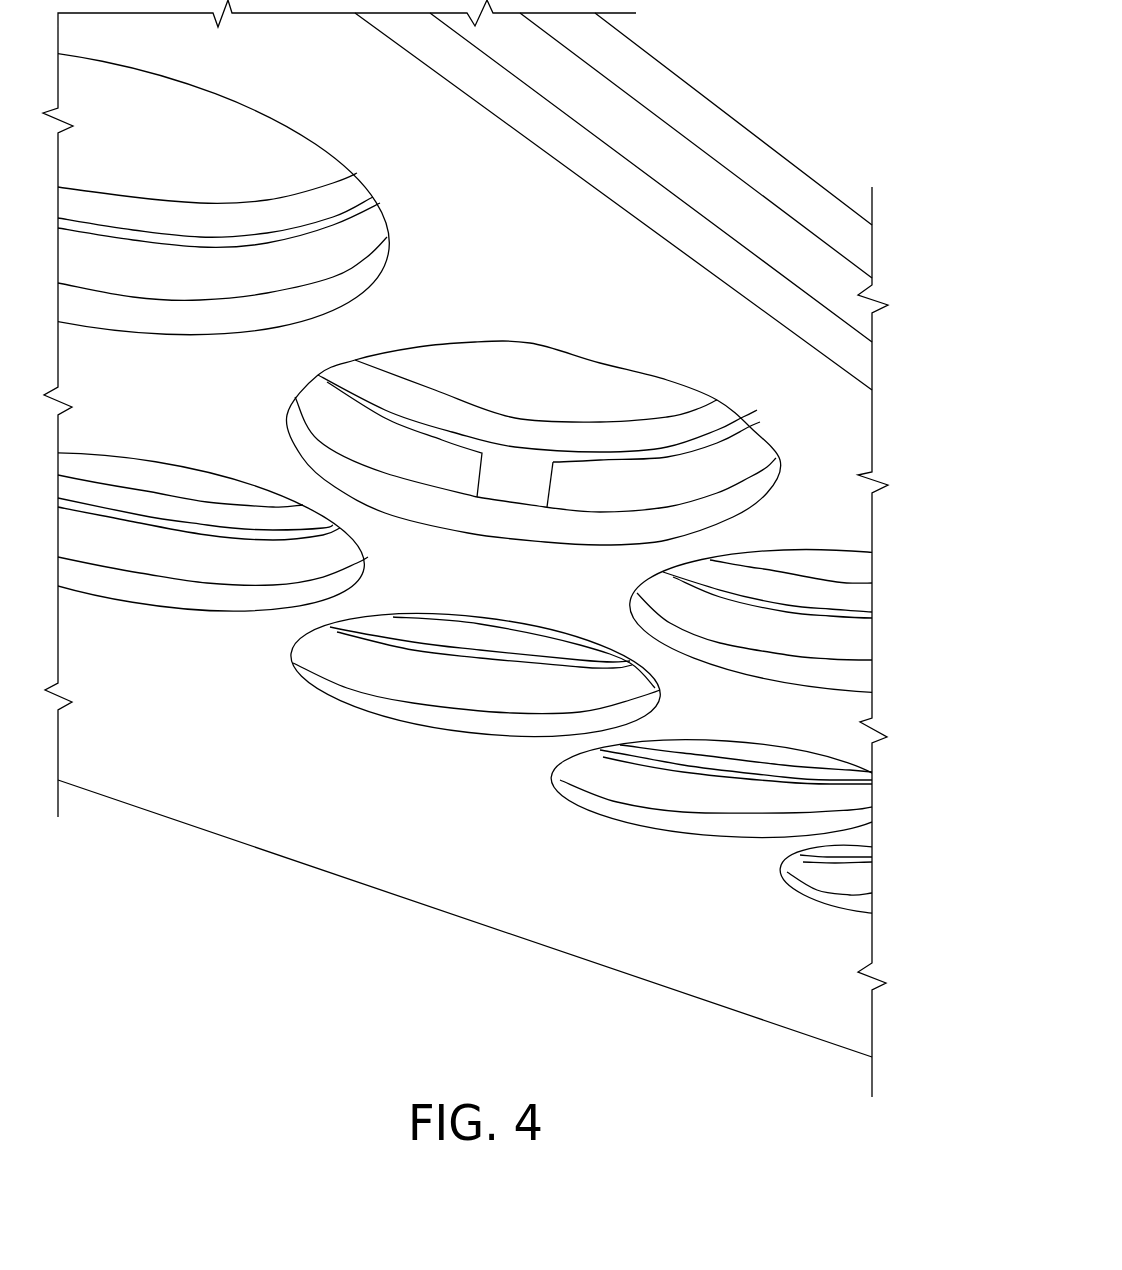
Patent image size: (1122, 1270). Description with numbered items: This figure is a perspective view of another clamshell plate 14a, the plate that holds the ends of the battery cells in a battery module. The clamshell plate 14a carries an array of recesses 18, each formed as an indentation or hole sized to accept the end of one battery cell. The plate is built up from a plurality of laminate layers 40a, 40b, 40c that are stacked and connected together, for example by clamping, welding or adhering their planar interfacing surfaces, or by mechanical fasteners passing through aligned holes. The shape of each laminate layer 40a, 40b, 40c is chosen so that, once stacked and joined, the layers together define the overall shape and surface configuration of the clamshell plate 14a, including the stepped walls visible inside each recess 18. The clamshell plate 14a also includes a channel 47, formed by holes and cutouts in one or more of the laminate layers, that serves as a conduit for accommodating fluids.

The clamshell plate 14a is at (880, 227).
The recess 18 is at (663, 422).
The laminate layer 40a is at (620, 452).
The laminate layer 40b is at (620, 498).
The laminate layer 40c is at (600, 540).
The channel 47 is at (512, 470).